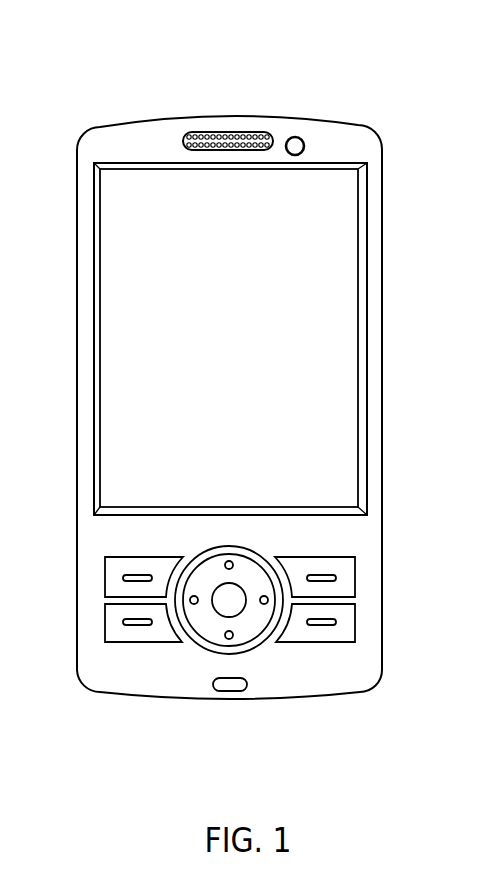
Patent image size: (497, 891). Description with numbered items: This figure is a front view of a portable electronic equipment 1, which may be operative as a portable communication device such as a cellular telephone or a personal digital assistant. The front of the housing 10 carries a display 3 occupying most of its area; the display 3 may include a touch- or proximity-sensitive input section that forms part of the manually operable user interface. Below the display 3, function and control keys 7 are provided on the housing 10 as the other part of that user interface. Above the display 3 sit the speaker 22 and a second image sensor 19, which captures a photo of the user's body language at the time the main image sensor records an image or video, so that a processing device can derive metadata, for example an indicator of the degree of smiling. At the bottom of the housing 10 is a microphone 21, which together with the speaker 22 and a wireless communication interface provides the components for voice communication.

The portable electronic equipment 1 is at (90, 109).
The display 3 is at (348, 216).
The function and control keys 7 is at (150, 676).
The housing 10 is at (318, 682).
The second image sensor 19 is at (303, 140).
The microphone 21 is at (232, 690).
The speaker 22 is at (230, 134).